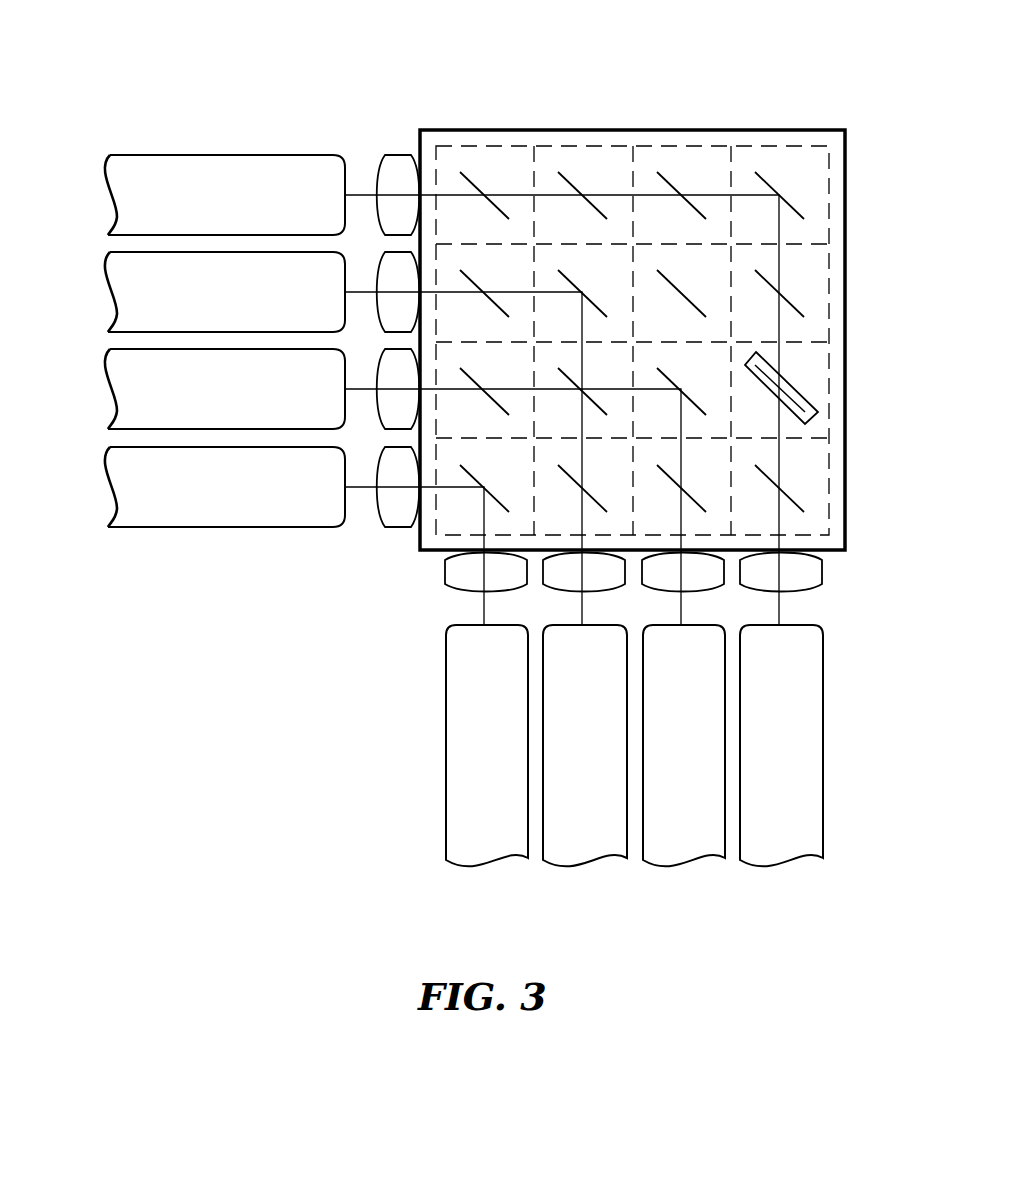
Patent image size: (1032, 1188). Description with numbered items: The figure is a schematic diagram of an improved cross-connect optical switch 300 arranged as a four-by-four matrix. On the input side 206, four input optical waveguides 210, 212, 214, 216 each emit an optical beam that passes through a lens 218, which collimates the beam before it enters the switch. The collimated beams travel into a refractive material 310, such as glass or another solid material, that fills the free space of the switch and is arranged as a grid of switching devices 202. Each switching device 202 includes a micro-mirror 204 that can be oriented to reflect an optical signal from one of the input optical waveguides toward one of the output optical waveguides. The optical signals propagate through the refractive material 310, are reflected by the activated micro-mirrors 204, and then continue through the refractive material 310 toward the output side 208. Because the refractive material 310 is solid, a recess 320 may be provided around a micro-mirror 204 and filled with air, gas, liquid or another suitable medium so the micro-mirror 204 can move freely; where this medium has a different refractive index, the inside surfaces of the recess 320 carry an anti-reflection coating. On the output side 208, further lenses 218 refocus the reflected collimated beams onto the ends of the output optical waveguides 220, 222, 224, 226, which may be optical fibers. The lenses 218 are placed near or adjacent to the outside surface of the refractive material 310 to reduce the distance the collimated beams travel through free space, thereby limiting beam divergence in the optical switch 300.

The switching device 202 is at (780, 147).
The micro-mirror 204 is at (797, 207).
The input side 206 is at (196, 291).
The output side 208 is at (565, 765).
The input optical waveguide 210 is at (105, 205).
The input optical waveguide 212 is at (105, 302).
The input optical waveguide 214 is at (105, 398).
The input optical waveguide 216 is at (105, 495).
The lens 218 is at (396, 132).
The output optical waveguide 220 is at (488, 863).
The output optical waveguide 222 is at (585, 863).
The output optical waveguide 224 is at (683, 863).
The output optical waveguide 226 is at (780, 863).
The cross-connect optical switch 300 is at (253, 674).
The refractive material 310 is at (590, 128).
The recess 320 is at (798, 392).